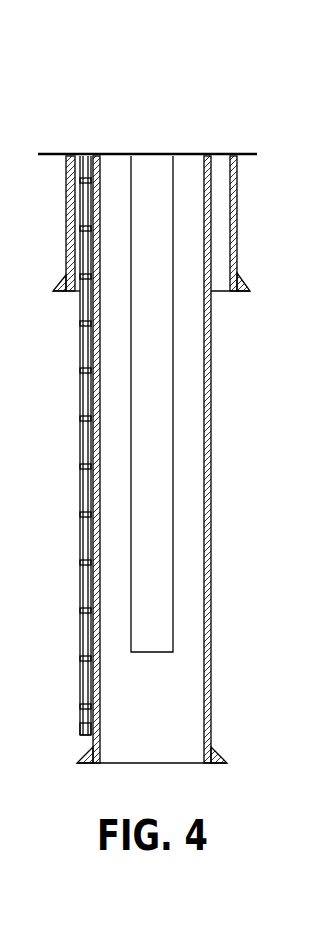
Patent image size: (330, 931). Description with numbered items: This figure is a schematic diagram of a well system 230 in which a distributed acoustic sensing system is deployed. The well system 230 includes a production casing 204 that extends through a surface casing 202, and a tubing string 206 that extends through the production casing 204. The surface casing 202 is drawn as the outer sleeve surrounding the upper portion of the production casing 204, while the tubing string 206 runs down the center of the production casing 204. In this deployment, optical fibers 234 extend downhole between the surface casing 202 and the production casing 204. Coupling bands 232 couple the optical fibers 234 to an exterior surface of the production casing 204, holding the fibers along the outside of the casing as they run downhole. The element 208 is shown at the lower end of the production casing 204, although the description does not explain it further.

The well system 230 is at (206, 122).
The surface casing 202 is at (242, 224).
The production casing 204 is at (217, 329).
The tubing string 206 is at (177, 631).
The bottom flange 208 is at (102, 733).
The coupling bands 232 is at (102, 421).
The optical fibers 234 is at (102, 538).